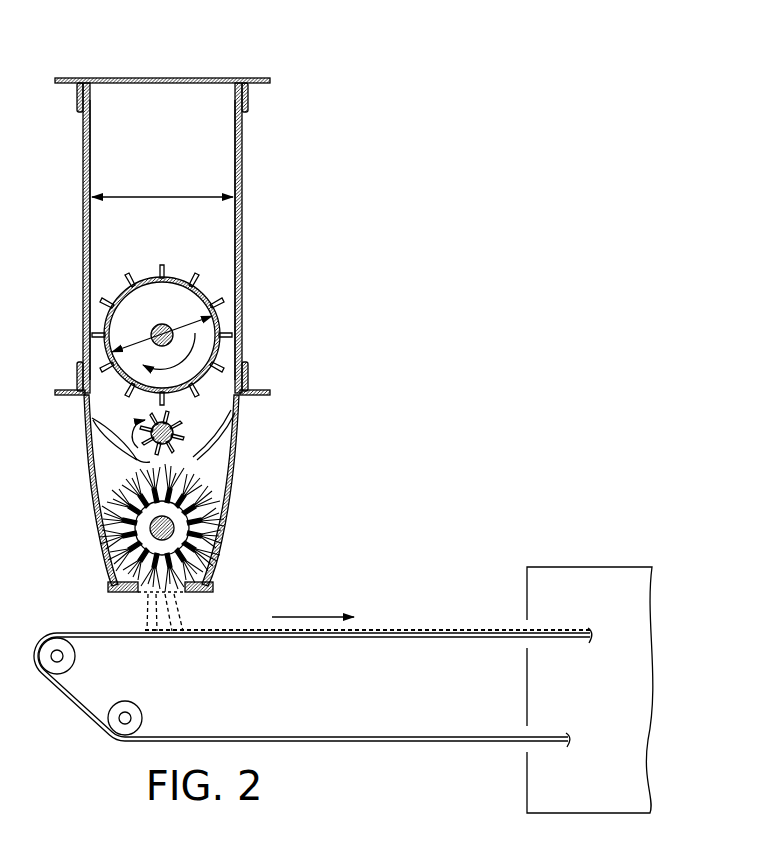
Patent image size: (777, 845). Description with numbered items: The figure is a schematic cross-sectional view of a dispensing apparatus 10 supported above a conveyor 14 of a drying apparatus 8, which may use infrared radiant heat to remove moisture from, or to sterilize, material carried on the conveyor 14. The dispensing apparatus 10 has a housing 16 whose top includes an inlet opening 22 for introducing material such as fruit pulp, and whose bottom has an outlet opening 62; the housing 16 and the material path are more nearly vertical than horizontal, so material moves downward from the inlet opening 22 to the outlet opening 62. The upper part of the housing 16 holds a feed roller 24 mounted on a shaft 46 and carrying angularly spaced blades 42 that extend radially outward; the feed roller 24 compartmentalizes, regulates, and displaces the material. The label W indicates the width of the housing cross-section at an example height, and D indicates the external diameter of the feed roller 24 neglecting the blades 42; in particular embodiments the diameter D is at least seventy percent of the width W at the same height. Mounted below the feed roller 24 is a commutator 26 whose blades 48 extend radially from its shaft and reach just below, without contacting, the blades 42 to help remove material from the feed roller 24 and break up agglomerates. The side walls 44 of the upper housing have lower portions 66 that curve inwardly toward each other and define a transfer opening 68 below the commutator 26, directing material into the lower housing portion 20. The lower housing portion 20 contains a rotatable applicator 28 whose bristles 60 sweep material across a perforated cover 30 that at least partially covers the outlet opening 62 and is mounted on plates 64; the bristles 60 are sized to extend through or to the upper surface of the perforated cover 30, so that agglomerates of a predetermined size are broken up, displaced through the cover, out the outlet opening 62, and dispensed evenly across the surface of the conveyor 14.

The drying apparatus 8 is at (583, 561).
The dispensing apparatus 10 is at (347, 283).
The conveyor 14 is at (359, 748).
The housing 16 is at (247, 158).
The lower housing portion 20 is at (95, 498).
The inlet opening 22 is at (130, 78).
The feed roller 24 is at (174, 302).
The commutator 26 is at (230, 426).
The applicator 28 is at (176, 528).
The perforated cover 30 is at (150, 594).
The blades 42 is at (194, 278).
The side walls 44 is at (236, 160).
The shaft 46 is at (172, 344).
The blades 48 is at (173, 450).
The bristles 60 is at (118, 570).
The outlet opening 62 is at (180, 594).
The plates 64 is at (108, 586).
The curved side wall portions 66 is at (93, 421).
The transfer opening 68 is at (145, 462).
The width W is at (120, 196).
The diameter D is at (120, 350).